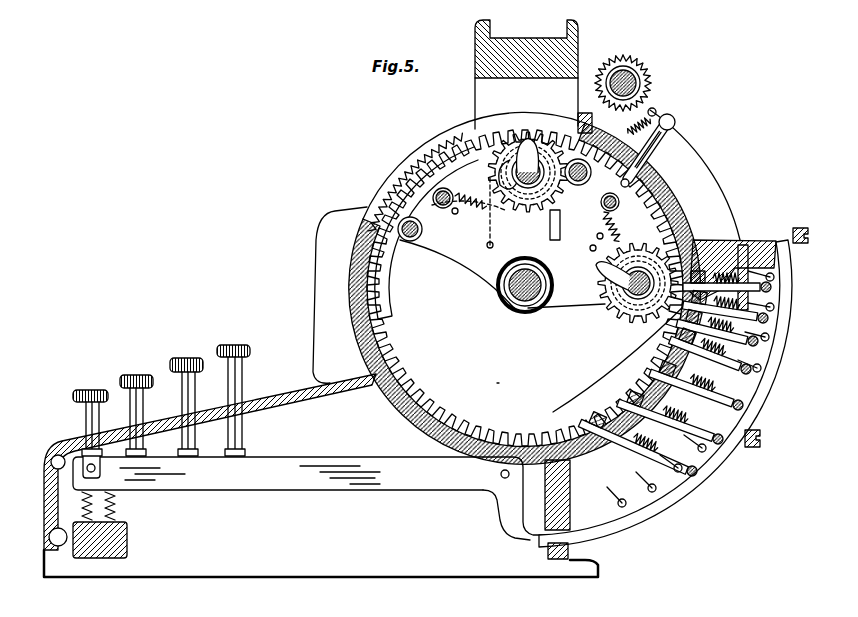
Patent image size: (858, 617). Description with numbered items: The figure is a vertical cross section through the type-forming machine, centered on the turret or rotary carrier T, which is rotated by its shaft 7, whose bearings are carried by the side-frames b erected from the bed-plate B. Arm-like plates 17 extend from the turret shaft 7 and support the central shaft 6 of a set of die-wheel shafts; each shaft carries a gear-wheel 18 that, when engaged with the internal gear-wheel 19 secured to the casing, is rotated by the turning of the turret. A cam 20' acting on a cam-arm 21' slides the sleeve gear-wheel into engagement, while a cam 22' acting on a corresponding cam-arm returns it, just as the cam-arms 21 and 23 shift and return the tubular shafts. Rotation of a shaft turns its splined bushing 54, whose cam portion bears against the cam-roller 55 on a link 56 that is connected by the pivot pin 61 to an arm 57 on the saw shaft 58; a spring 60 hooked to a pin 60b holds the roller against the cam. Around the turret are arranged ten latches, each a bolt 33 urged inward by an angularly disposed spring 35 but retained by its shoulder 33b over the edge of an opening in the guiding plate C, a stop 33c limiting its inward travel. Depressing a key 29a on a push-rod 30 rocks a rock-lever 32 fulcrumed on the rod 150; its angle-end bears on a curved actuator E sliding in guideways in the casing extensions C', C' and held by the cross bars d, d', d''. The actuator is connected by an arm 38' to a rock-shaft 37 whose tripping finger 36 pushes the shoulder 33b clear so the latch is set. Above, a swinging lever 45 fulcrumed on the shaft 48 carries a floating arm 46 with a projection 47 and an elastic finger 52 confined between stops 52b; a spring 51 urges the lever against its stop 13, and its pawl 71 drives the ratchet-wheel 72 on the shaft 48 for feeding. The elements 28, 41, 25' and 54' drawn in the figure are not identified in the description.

The bed-plate B is at (321, 392).
The rock-lever 32 is at (362, 466).
The rod 150 is at (503, 478).
The push-rod 30 is at (100, 430).
The key 29a is at (182, 358).
The floating arm 46 is at (660, 178).
The cam-roller 55 is at (452, 147).
The cam 20' is at (426, 233).
The guide arc 28 is at (516, 150).
The upper bracket 41 is at (580, 36).
The stop 13 is at (600, 112).
The shaft 48 is at (630, 72).
The ratchet-wheel 72 is at (648, 80).
The spring-pressed pawl 71 is at (656, 100).
The swinging lever 45 is at (668, 112).
The stops 52b is at (648, 162).
The spring 51 is at (676, 119).
The pin 47 is at (633, 190).
The elastic finger 52 is at (670, 140).
The gear-wheel 18 is at (526, 210).
The bushing 54 is at (583, 227).
The central shaft 6 is at (520, 180).
The cam finger 25' is at (544, 134).
The internal gear-wheel 19 is at (620, 262).
The cam-arm 21 is at (480, 212).
The cam-arm 21' is at (566, 323).
The pivot pin 61 is at (432, 196).
The saw shaft 58 is at (420, 232).
The arm 57 is at (432, 210).
The link 56 is at (470, 196).
The spring 60 is at (438, 210).
The pin 54' is at (526, 232).
The pin 60b is at (489, 248).
The turret shaft 7 is at (512, 305).
The arms 17 is at (455, 276).
The turret T is at (487, 311).
The side-frames b is at (500, 377).
The actuator E is at (790, 310).
The cam-arm 23 is at (718, 245).
The casing extensions C' is at (666, 371).
The retaining and guiding plate C is at (739, 330).
The cross bar d is at (807, 227).
The cross bar d' is at (775, 432).
The cross bar d'' is at (588, 548).
The cam 22' is at (621, 356).
The latch 33 is at (660, 345).
The spring 35 is at (640, 400).
The shoulder 33b is at (752, 342).
The tripping finger 36 is at (776, 277).
The rock-shaft 37 is at (776, 306).
The stop 33c is at (710, 452).
The arm 38' is at (649, 512).